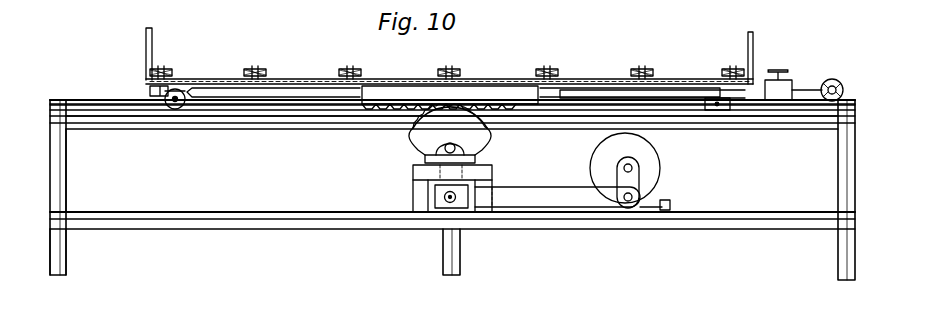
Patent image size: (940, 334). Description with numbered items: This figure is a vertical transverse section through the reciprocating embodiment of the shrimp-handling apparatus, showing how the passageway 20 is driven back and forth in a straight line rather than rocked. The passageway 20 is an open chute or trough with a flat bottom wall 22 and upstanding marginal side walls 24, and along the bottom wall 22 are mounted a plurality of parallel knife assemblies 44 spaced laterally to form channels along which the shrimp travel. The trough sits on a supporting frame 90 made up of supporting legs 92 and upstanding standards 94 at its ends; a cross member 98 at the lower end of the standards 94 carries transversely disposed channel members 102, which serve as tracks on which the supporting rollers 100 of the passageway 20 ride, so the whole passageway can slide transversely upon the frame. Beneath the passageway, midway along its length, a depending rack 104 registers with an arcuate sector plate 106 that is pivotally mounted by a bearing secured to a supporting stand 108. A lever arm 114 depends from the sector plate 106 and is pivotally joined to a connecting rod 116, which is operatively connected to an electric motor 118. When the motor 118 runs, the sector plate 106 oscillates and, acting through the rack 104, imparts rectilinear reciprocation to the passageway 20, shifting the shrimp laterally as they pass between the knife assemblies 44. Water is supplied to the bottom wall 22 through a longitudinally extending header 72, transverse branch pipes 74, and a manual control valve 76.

The passageway 20 is at (219, 69).
The bottom wall 22 is at (497, 80).
The marginal side walls 24 is at (146, 42).
The knife assemblies 44 is at (262, 68).
The header 72 is at (834, 80).
The branch pipes 74 is at (605, 93).
The manual control valve 76 is at (775, 88).
The supporting frame 90 is at (867, 160).
The supporting legs 92 is at (66, 255).
The standards 94 is at (60, 172).
The cross member 98 is at (263, 118).
The supporting rollers 100 is at (150, 92).
The channel members 102 is at (68, 100).
The rack 104 is at (398, 96).
The sector plate 106 is at (492, 142).
The supporting stand 108 is at (420, 170).
The lever arm 114 is at (442, 186).
The connecting rod 116 is at (550, 194).
The electric motor 118 is at (660, 176).